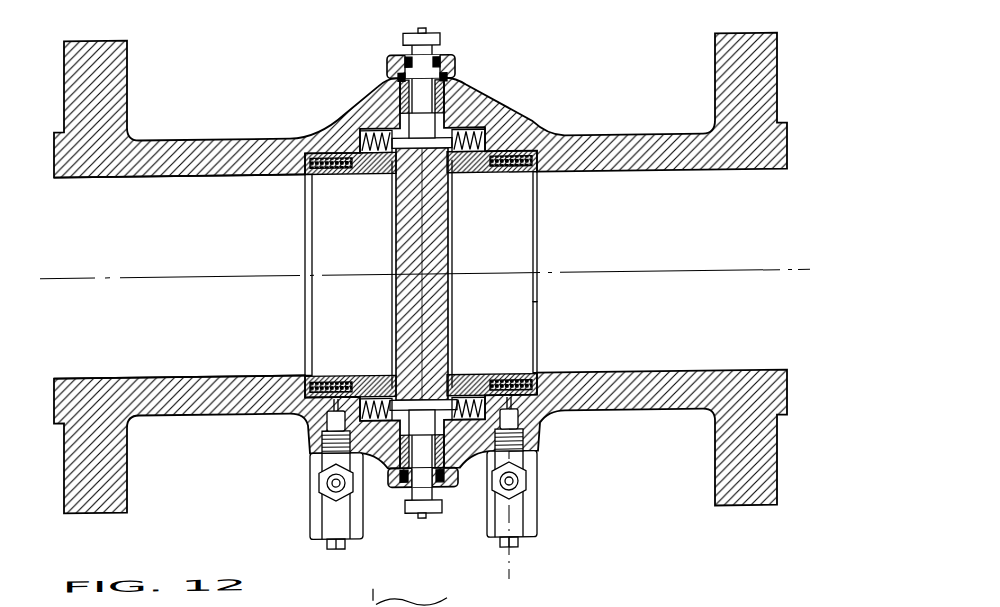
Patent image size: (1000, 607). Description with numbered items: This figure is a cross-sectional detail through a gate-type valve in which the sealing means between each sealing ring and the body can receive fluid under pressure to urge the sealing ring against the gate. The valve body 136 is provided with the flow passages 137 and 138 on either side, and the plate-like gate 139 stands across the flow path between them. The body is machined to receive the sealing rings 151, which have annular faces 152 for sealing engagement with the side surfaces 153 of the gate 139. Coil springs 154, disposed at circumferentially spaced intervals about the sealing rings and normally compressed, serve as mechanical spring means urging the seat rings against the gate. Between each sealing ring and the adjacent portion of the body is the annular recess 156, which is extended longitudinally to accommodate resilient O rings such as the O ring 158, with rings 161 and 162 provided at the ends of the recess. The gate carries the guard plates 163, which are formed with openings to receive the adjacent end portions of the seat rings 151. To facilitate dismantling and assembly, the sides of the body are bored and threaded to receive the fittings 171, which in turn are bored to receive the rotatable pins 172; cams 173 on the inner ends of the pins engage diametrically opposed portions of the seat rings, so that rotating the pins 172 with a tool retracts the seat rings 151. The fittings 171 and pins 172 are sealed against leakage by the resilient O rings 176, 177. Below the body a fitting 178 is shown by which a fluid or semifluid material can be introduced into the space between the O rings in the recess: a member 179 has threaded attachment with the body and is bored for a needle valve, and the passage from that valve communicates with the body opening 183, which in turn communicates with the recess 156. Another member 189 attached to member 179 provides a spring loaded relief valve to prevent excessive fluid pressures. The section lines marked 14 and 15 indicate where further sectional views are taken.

The section line 14- 14 is at (487, 350).
The section line 15- 15 is at (396, 10).
The valve body 136 is at (198, 146).
The flow passage 137 is at (241, 184).
The flow passage 138 is at (668, 177).
The plate-like gate 139 is at (432, 262).
The sealing ring 151 is at (365, 166).
The annular face 152 is at (451, 171).
The side surface 153 is at (396, 296).
The coil spring 154 is at (479, 138).
The annular recess 156 is at (330, 166).
The resilient O ring 158 is at (522, 172).
The ring 161 is at (491, 169).
The ring 162 is at (540, 384).
The guard plate 163 is at (447, 165).
The fitting 171 is at (453, 66).
The rotatable pin 172 is at (412, 128).
The cam 173 is at (397, 182).
The resilient O ring 176 is at (399, 78).
The resilient O ring 177 is at (406, 61).
The fitting 178 is at (312, 494).
The member 179 is at (316, 510).
The body opening 183 is at (328, 418).
The member 189 is at (328, 478).